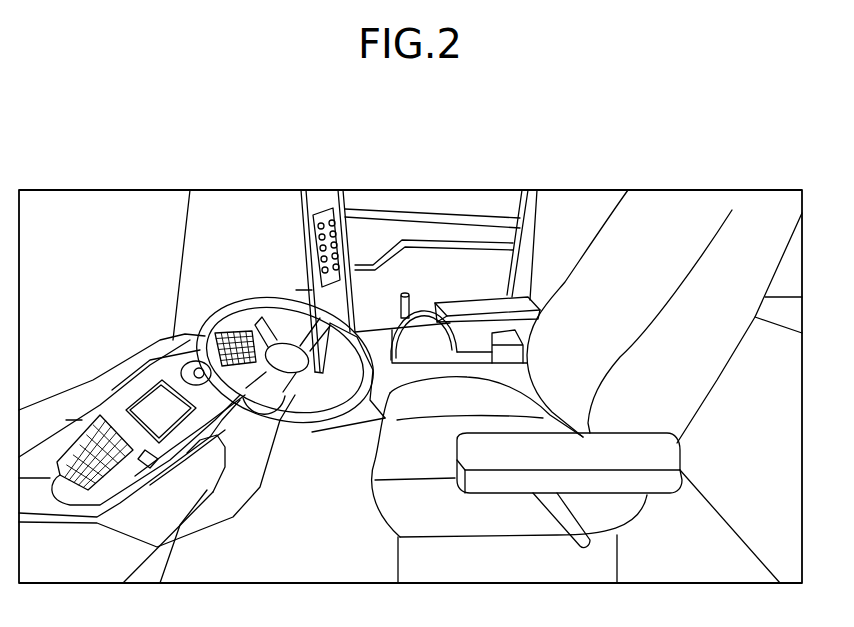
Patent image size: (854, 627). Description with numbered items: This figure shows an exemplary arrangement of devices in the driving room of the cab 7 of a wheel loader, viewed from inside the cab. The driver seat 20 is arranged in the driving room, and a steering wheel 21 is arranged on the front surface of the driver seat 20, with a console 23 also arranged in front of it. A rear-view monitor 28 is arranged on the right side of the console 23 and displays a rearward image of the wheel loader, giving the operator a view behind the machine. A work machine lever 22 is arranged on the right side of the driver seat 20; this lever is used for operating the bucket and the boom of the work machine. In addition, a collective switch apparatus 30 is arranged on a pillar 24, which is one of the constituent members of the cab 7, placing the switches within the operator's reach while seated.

The cab 7 is at (676, 152).
The driver seat 20 is at (757, 215).
The steering wheel 21 is at (226, 297).
The work machine lever 22 is at (405, 290).
The console 23 is at (140, 352).
The pillar 24 is at (313, 200).
The rear-view monitor 28 is at (295, 292).
The collective switch apparatus 30 is at (324, 208).